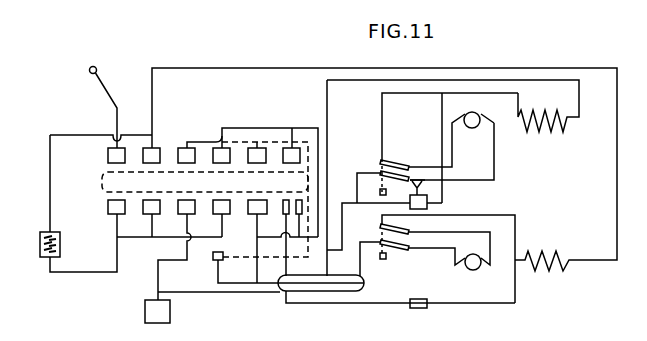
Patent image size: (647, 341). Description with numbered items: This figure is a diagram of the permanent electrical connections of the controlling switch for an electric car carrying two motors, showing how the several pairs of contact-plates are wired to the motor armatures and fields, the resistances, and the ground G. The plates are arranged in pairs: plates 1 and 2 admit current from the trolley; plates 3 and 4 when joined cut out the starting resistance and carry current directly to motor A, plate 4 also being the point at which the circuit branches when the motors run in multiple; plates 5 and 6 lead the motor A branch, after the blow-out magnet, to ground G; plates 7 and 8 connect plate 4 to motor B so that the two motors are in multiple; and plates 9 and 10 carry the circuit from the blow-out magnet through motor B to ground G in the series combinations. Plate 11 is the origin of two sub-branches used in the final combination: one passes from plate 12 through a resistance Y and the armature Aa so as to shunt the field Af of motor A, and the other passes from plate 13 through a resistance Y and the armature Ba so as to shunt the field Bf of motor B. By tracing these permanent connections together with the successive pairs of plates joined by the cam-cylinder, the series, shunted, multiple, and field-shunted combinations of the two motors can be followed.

The contact-plate 1 is at (108, 115).
The contact-plate 2 is at (116, 207).
The contact-plate 3 is at (380, 164).
The contact-plate 4 is at (151, 218).
The contact-plate 5 is at (200, 149).
The contact-plate 6 is at (176, 250).
The contact-plate 7 is at (265, 182).
The contact-plate 8 is at (221, 218).
The contact-plate 9 is at (257, 152).
The contact-plate 10 is at (257, 241).
The contact-plate 11 is at (291, 145).
The contact-plate 12 is at (279, 238).
The contact-plate 13 is at (287, 218).
The ground G is at (157, 311).
The resistance Y is at (418, 244).
The armature of motor B Ba is at (449, 148).
The field of motor B Bf is at (544, 112).
The armature of motor A Aa is at (437, 259).
The field of motor A Af is at (543, 256).